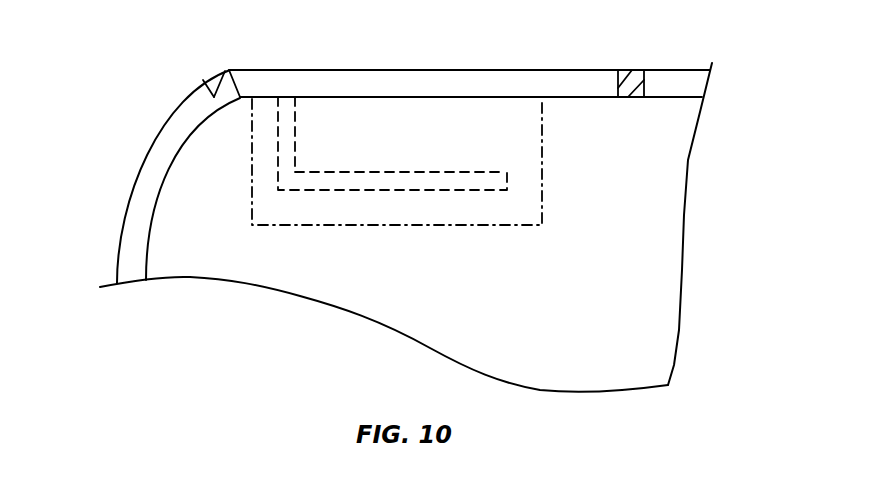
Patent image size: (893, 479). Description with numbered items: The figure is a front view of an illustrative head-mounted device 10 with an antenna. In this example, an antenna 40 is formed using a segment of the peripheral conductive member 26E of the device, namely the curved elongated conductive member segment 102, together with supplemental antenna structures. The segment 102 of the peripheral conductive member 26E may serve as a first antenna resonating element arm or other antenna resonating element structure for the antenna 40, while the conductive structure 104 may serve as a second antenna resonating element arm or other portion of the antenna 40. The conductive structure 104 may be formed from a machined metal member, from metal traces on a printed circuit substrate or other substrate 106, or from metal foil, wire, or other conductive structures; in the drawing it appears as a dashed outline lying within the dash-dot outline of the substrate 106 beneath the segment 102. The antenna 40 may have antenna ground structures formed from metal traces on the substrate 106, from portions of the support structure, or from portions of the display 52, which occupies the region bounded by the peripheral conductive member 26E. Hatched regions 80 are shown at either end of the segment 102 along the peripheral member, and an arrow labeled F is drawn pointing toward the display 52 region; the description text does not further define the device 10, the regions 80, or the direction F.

The electronic device 10 is at (172, 49).
The peripheral conductive member 26E is at (128, 243).
The display 52 is at (678, 135).
The antenna 40 is at (473, 48).
The curved elongated conductive member segment 102 is at (358, 80).
The hatched region 80 is at (218, 78).
The conductive structure 104 is at (404, 190).
The substrate 106 is at (545, 187).
The force direction F is at (652, 332).